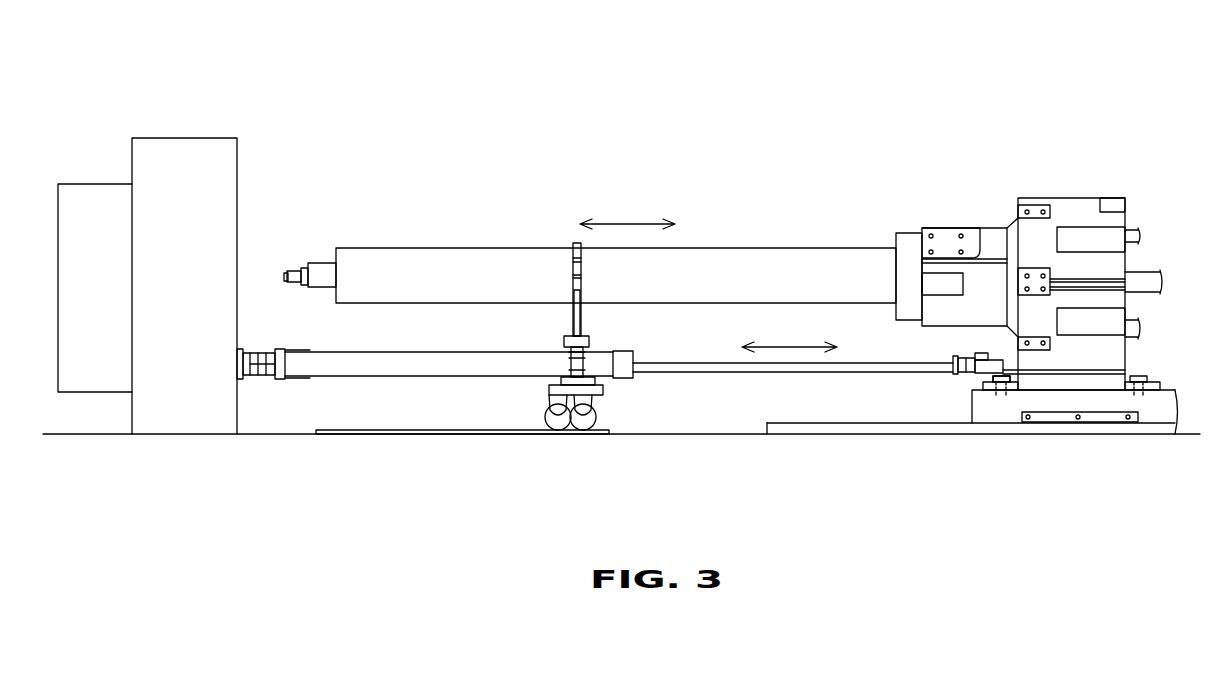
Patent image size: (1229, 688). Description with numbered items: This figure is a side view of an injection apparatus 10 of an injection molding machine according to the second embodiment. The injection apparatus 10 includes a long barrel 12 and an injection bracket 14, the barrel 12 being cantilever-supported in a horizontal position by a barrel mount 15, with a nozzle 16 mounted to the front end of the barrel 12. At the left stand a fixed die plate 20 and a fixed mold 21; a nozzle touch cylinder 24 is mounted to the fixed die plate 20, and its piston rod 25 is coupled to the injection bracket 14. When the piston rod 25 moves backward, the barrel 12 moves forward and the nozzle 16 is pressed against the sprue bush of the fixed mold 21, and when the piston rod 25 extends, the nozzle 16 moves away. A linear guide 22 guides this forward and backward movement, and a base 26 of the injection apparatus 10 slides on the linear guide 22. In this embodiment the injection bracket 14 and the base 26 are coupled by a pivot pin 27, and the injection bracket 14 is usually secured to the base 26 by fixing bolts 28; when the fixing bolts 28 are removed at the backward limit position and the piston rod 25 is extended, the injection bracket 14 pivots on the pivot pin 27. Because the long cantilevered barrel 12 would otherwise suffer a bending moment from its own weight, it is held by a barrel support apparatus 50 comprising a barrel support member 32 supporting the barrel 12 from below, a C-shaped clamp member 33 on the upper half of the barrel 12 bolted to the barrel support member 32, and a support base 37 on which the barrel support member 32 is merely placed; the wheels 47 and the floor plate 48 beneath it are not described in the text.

The injection apparatus 10 is at (1172, 126).
The barrel 12 is at (712, 258).
The injection bracket 14 is at (1070, 208).
The barrel mount 15 is at (972, 273).
The nozzle 16 is at (298, 268).
The fixed die plate 20 is at (228, 163).
The fixed mold 21 is at (86, 190).
The linear guide 22 is at (873, 428).
The nozzle touch cylinder 24 is at (435, 372).
The piston rod 25 is at (805, 372).
The base 26 is at (1152, 418).
The pivot pin 27 is at (1140, 375).
The fixing bolts 28 is at (993, 378).
The barrel support member 32 is at (582, 312).
The clamp member 33 is at (577, 243).
The support base 37 is at (590, 340).
The caster wheels 47 is at (600, 412).
The floor plate 48 is at (505, 430).
The barrel support apparatus 50 is at (540, 321).